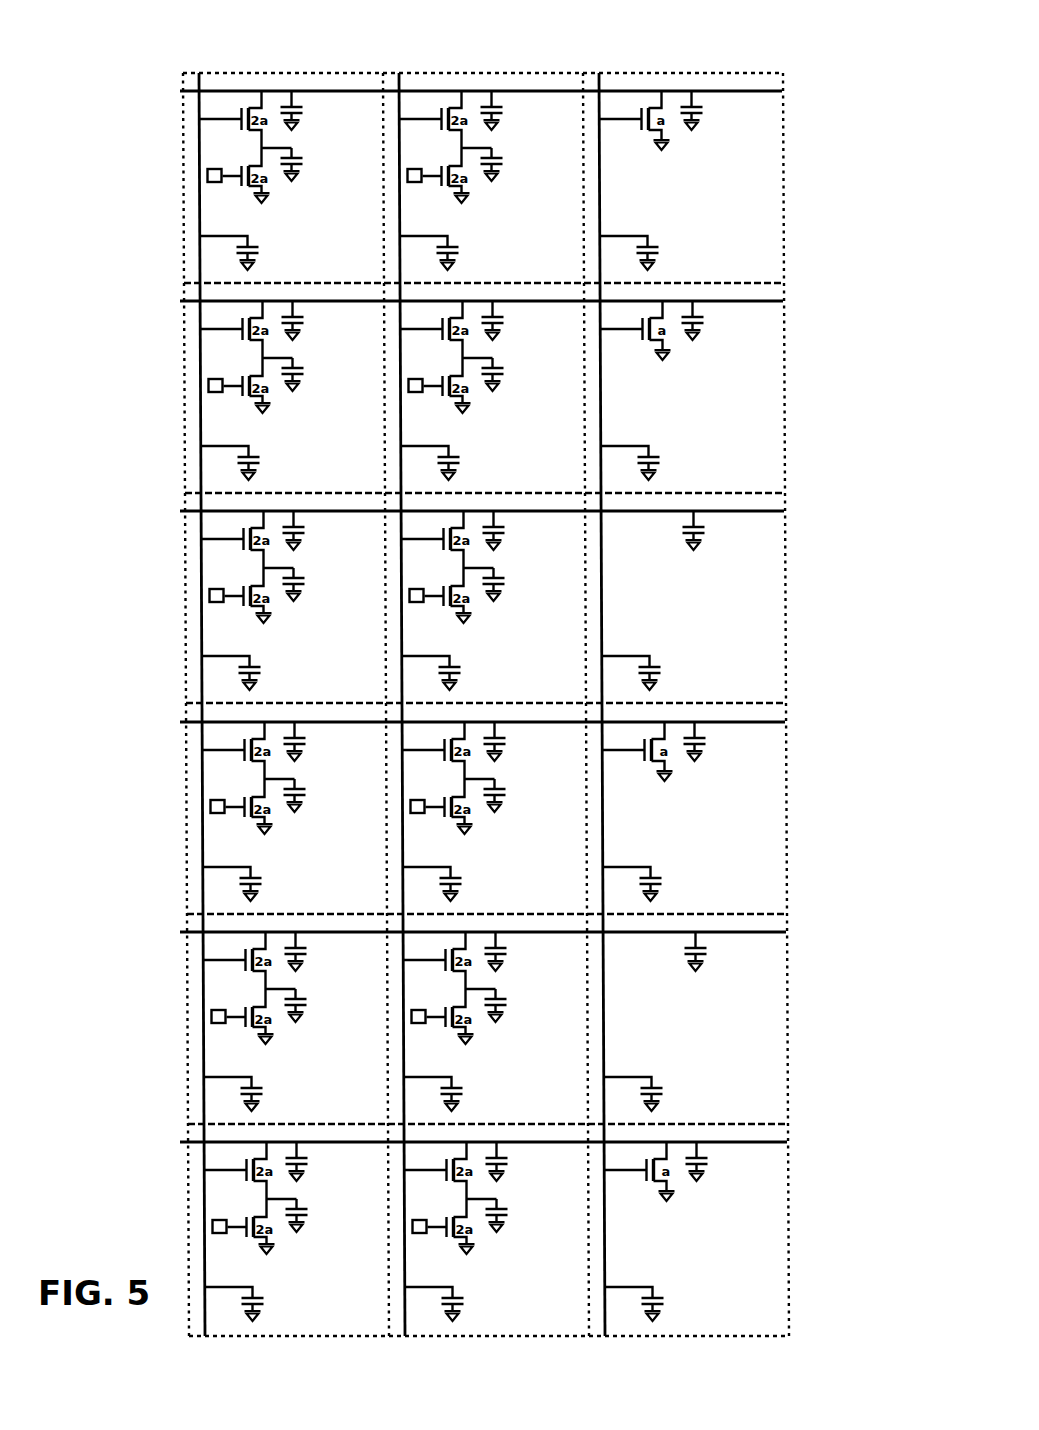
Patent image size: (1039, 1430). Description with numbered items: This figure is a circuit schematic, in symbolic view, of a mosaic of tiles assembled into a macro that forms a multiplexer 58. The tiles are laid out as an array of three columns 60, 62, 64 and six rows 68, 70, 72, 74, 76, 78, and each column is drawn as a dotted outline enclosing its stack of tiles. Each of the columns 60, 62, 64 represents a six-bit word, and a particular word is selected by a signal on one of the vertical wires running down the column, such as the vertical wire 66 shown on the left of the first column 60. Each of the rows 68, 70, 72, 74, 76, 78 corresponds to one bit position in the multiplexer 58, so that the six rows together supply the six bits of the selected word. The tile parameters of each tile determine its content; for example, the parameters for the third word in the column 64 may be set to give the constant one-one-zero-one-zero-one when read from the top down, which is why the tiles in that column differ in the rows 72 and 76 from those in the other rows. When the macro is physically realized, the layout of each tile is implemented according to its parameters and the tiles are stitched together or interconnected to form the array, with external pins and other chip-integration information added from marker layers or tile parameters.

The multiplexer 58 is at (453, 669).
The column 60 is at (194, 669).
The column 62 is at (493, 56).
The column 64 is at (688, 61).
The vertical wire 66 is at (196, 146).
The row 68 is at (157, 214).
The row 70 is at (152, 416).
The row 72 is at (160, 614).
The row 74 is at (142, 826).
The row 76 is at (150, 1024).
The row 78 is at (160, 1214).